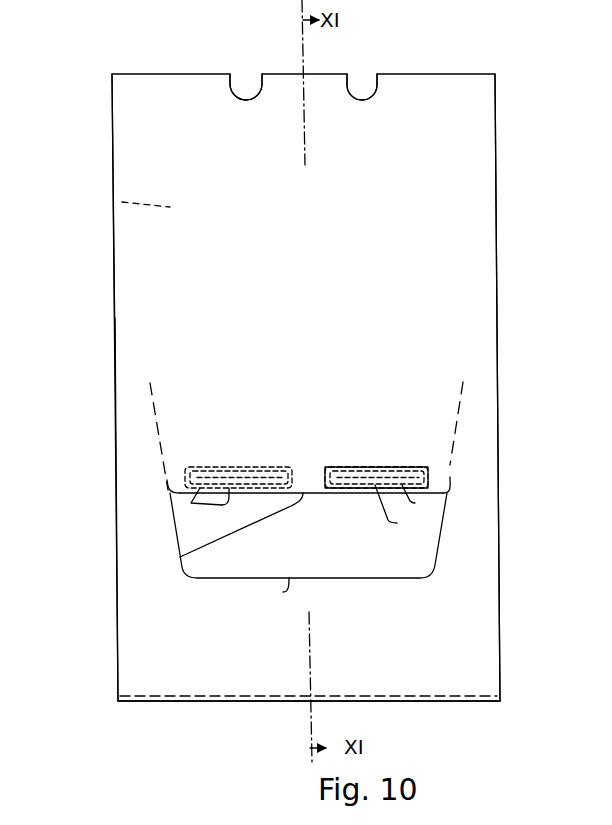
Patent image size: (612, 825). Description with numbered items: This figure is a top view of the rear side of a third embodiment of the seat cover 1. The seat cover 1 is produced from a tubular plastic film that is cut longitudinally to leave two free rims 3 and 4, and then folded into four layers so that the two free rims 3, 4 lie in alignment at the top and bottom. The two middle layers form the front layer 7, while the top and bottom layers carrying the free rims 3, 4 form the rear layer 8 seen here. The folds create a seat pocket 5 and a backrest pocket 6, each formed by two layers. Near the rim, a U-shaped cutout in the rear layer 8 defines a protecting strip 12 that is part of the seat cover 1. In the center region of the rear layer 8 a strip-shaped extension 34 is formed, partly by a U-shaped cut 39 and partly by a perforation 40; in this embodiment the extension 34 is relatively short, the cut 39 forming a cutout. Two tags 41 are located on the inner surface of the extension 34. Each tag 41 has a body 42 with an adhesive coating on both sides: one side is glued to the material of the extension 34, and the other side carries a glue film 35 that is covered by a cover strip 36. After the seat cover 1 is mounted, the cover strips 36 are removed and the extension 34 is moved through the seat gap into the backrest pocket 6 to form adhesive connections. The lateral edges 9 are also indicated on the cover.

The seat cover 1 is at (93, 115).
The free rim 3 is at (203, 700).
The free rim 4 is at (161, 74).
The seat pocket 5 is at (252, 658).
The backrest pocket 6 is at (295, 243).
The front layer 7 is at (120, 202).
The rear layer 8 is at (140, 163).
The lateral edge 9 is at (115, 318).
The protecting strip 12 is at (140, 463).
The strip-shaped extension 34 is at (395, 442).
The glue film 35 is at (413, 503).
The cover strip 36 is at (226, 505).
The U-shaped cut 39 is at (283, 592).
The perforation 40 is at (150, 390).
The tag 41 is at (360, 452).
The body 42 is at (191, 503).